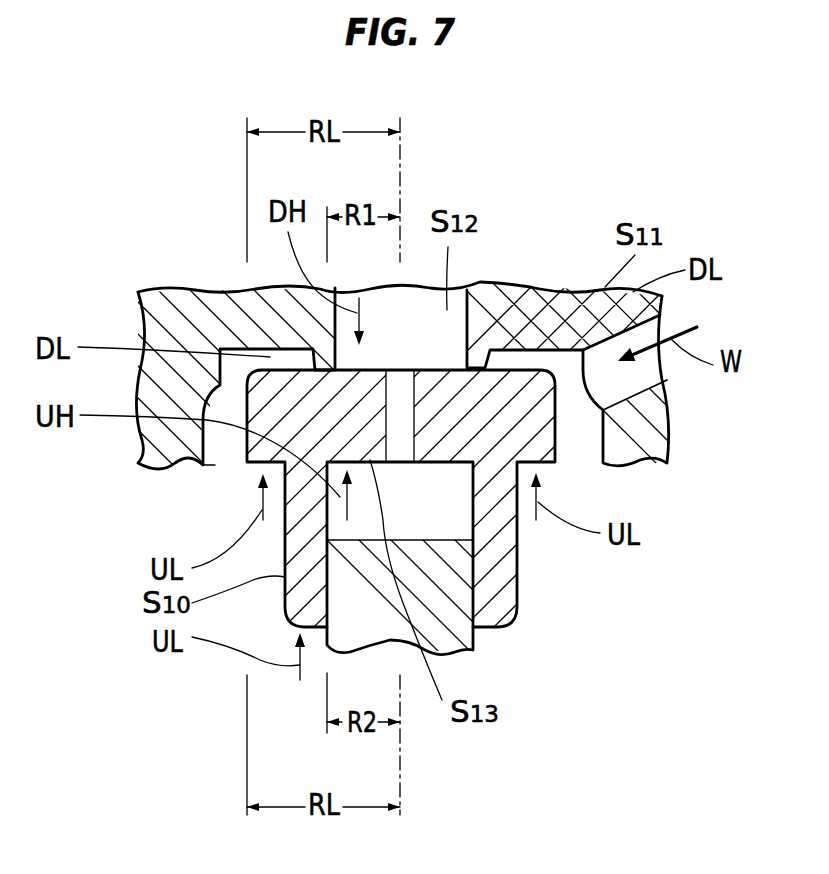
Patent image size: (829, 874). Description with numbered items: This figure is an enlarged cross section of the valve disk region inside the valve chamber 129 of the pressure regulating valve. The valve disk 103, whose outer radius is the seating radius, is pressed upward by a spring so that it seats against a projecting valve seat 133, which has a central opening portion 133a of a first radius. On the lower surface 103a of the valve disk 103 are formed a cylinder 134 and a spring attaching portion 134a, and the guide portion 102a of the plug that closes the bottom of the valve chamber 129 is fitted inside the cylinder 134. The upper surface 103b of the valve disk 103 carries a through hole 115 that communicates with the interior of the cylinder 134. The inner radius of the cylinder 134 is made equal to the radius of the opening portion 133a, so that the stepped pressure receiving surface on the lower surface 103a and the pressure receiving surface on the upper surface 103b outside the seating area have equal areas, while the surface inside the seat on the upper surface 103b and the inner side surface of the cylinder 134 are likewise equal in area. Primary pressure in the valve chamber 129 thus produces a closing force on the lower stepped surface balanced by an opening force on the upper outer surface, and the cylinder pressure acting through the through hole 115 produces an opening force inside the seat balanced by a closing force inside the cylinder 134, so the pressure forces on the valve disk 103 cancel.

The valve disk 103 is at (557, 462).
The lower surface of the valve disk 103a is at (255, 480).
The upper surface of the valve disk 103b is at (257, 293).
The through hole 115 is at (398, 440).
The valve chamber 129 is at (578, 430).
The valve seat 133 is at (535, 370).
The opening portion of the valve seat 133a is at (380, 370).
The cylinder 134 is at (450, 527).
The spring attaching portion 134a is at (247, 462).
The guide portion of the plug 102a is at (457, 593).